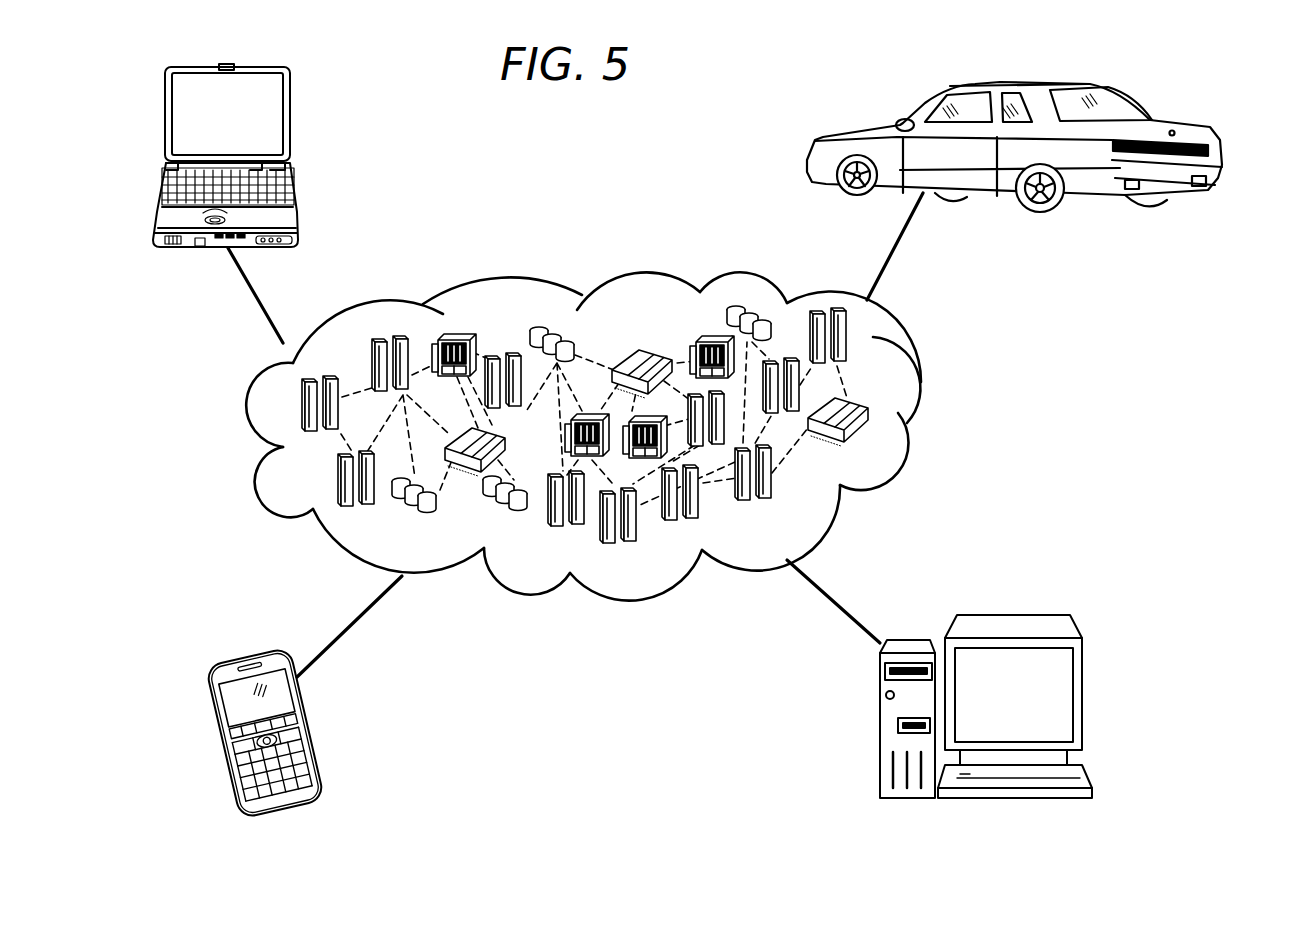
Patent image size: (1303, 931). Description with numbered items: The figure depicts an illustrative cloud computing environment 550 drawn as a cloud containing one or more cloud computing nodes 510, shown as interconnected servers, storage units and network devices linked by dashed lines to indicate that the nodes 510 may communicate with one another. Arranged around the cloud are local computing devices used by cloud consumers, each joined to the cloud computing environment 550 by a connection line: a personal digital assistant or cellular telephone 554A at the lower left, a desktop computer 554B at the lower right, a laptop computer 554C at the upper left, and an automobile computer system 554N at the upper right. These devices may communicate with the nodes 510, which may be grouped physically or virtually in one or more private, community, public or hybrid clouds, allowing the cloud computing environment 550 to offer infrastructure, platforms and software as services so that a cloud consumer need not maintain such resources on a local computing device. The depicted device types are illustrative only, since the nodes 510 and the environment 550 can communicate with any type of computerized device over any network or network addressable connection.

The cloud computing environment 550 is at (918, 360).
The cloud computing nodes 510 is at (873, 438).
The personal digital assistant (PDA) or cellular telephone 554A is at (212, 720).
The desktop computer 554B is at (1013, 615).
The laptop computer 554C is at (166, 110).
The automobile computer system 554N is at (1185, 124).